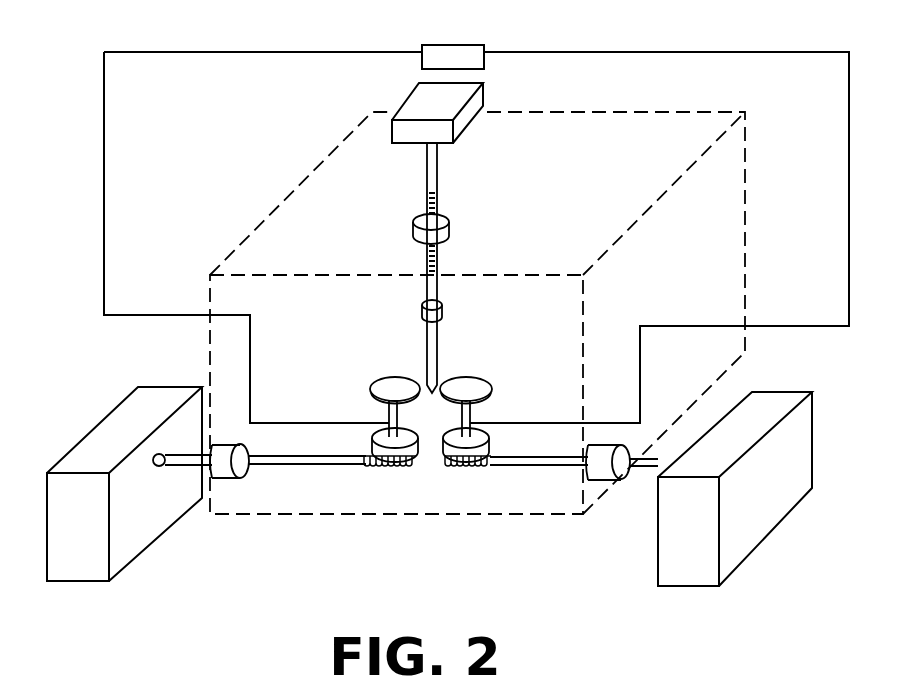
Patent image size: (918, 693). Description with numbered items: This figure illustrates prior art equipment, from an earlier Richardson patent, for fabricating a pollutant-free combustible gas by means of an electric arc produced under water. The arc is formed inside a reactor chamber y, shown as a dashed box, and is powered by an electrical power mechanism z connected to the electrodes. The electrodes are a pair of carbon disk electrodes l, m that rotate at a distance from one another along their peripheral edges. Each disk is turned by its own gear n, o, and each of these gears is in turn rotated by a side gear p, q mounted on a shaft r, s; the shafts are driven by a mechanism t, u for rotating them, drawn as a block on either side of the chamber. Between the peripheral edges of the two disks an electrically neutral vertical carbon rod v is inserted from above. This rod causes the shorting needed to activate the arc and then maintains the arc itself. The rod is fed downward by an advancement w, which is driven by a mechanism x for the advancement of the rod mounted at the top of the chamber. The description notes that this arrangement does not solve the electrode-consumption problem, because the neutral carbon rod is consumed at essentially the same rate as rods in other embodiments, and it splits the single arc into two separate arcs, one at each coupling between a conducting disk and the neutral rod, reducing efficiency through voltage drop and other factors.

The electrical power mechanism z is at (484, 51).
The mechanism for advancement of neutral vertical rod x is at (477, 103).
The advancement of neutral vertical rod w is at (437, 205).
The reactor chamber y is at (733, 208).
The electrodes neutral vertical rod v is at (438, 347).
The carbon disk electrode l is at (385, 387).
The carbon disk electrode m is at (452, 387).
The shaft of gear r is at (273, 468).
The side gear p is at (367, 463).
The gear rotating disk electrode n is at (412, 465).
The gear rotating disk electrode o is at (436, 464).
The side gear q is at (475, 464).
The shaft of gear s is at (533, 468).
The mechanism for rotating shaft t is at (70, 577).
The mechanism for rotating shaft u is at (686, 575).